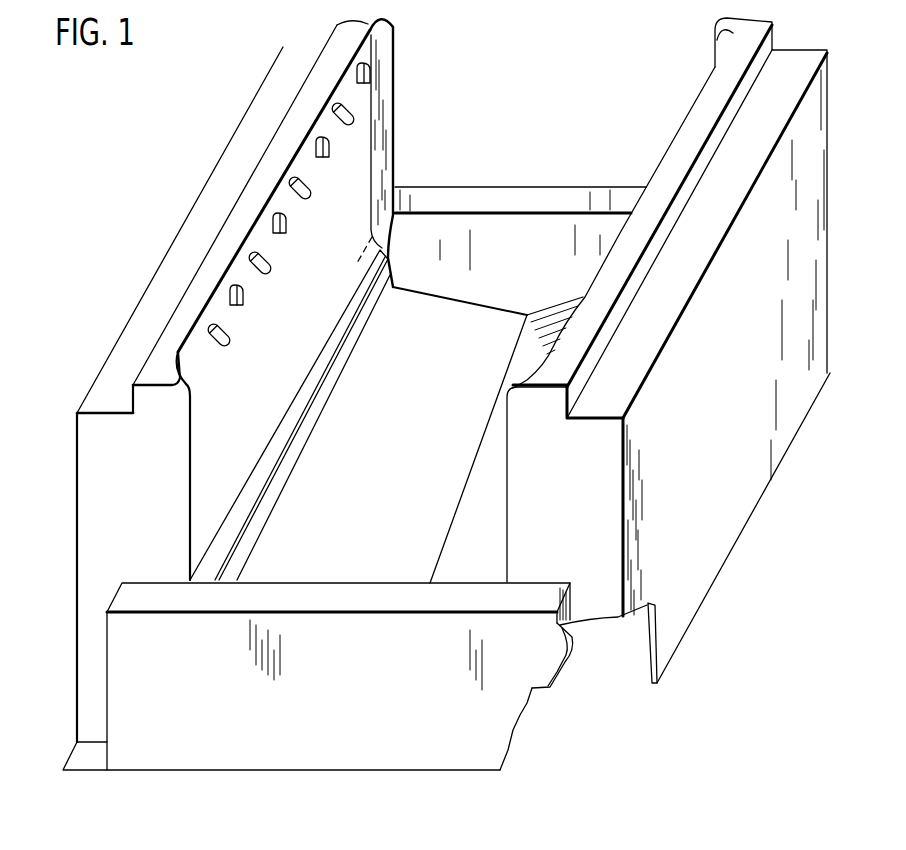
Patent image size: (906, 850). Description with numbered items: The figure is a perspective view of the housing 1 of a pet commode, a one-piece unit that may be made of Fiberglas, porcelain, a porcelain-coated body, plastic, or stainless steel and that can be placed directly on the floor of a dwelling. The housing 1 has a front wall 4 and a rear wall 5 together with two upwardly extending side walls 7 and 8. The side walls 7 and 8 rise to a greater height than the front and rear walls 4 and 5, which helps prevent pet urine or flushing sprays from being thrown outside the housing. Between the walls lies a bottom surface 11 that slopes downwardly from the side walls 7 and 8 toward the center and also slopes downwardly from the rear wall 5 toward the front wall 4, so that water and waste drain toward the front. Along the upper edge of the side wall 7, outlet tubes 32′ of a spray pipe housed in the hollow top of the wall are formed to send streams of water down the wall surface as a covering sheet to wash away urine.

The housing 1 is at (172, 157).
The front wall 4 is at (338, 689).
The rear wall 5 is at (542, 198).
The side wall 7 is at (77, 487).
The side wall 8 is at (735, 467).
The bottom surface 11 is at (441, 436).
The outlet tube 32′ is at (244, 299).